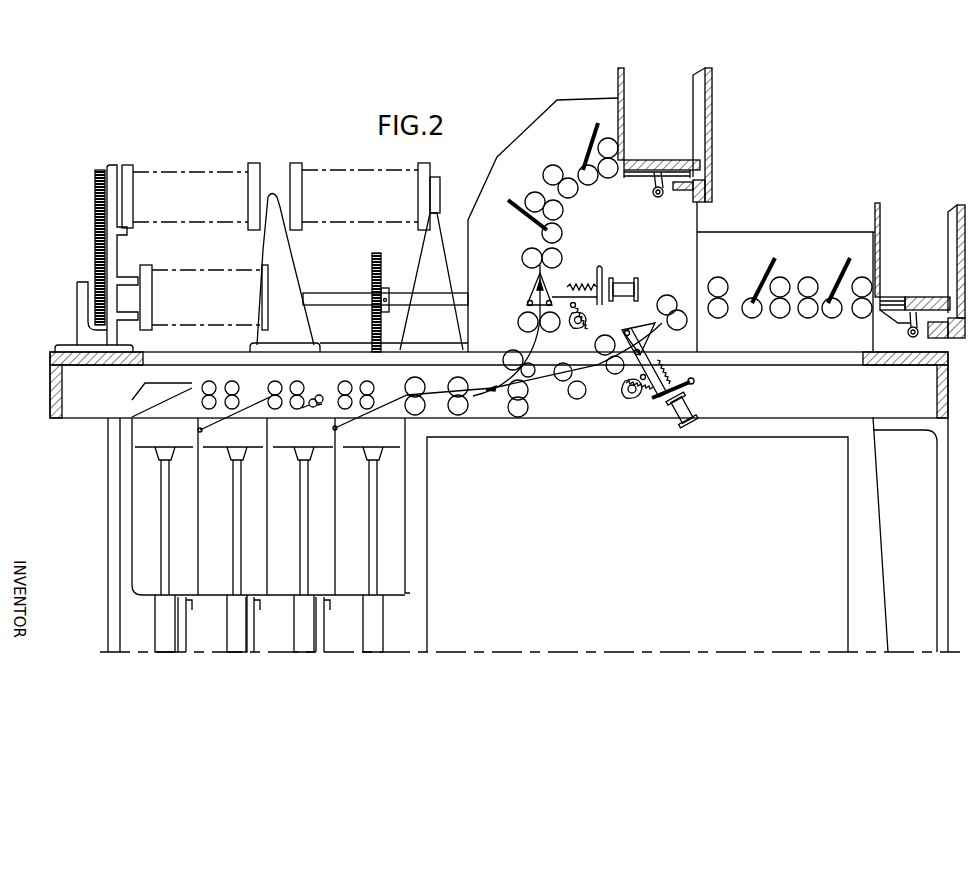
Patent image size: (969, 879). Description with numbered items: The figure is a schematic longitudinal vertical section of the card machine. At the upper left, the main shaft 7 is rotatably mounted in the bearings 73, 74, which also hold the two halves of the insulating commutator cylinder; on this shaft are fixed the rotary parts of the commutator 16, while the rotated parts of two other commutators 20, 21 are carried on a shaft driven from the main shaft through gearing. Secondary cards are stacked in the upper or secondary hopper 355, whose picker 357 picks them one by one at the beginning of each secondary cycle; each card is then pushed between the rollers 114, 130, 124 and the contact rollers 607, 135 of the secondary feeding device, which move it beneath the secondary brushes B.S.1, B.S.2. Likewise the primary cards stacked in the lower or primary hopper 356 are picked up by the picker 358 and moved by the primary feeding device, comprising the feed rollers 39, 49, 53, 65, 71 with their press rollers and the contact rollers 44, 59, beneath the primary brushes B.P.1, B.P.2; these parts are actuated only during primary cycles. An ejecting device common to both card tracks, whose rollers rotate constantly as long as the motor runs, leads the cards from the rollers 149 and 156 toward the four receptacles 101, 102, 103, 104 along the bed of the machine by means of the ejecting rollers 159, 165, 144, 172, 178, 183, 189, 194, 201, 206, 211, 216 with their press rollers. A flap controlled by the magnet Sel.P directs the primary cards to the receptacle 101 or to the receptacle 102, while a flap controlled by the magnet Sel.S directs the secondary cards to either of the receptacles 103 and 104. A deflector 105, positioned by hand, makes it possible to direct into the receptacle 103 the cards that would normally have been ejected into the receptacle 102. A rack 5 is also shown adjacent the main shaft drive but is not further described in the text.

The commutator 20 is at (163, 178).
The commutator 21 is at (347, 178).
The commutator 16 is at (178, 278).
The bearing 73 is at (112, 245).
The bearing 74 is at (283, 258).
The rack 5 is at (371, 279).
The main shaft 7 is at (351, 306).
The secondary brush B.S.1 is at (587, 145).
The secondary brush B.S.2 is at (528, 218).
The contact roller 607 is at (583, 172).
The feed roller 114 is at (610, 178).
The feed roller 130 is at (571, 194).
The feed roller 124 is at (560, 213).
The contact roller 135 is at (543, 236).
The ejecting roller 159 is at (562, 258).
The ejecting roller 156 is at (553, 331).
The secondary hopper 355 is at (665, 135).
The picker 357 is at (652, 197).
The primary hopper 356 is at (920, 270).
The picker 358 is at (905, 333).
The magnet Sel. S Sel.S is at (623, 283).
The magnet Sel. P Sel.P is at (692, 406).
The feed roller 71 is at (677, 330).
The primary brush B.P.2 is at (767, 260).
The primary brush B.P.1 is at (846, 262).
The feed roller 65 is at (719, 318).
The contact roller 59 is at (752, 318).
The feed roller 53 is at (781, 318).
The feed roller 49 is at (808, 318).
The contact roller 44 is at (832, 318).
The feed roller 39 is at (860, 318).
The ejecting roller 216 is at (204, 386).
The ejecting roller 211 is at (235, 378).
The ejecting roller 206 is at (270, 387).
The ejecting roller 201 is at (300, 378).
The deflector 105 is at (318, 394).
The ejecting roller 194 is at (350, 379).
The ejecting roller 189 is at (374, 388).
The ejecting roller 183 is at (424, 401).
The ejecting roller 178 is at (467, 403).
The ejecting roller 172 is at (528, 407).
The ejecting roller 165 is at (559, 377).
The ejecting roller 149 is at (616, 370).
The ejecting roller 144 is at (583, 394).
The receptacle 104 is at (164, 542).
The receptacle 103 is at (233, 542).
The receptacle 102 is at (303, 542).
The receptacle 101 is at (371, 542).